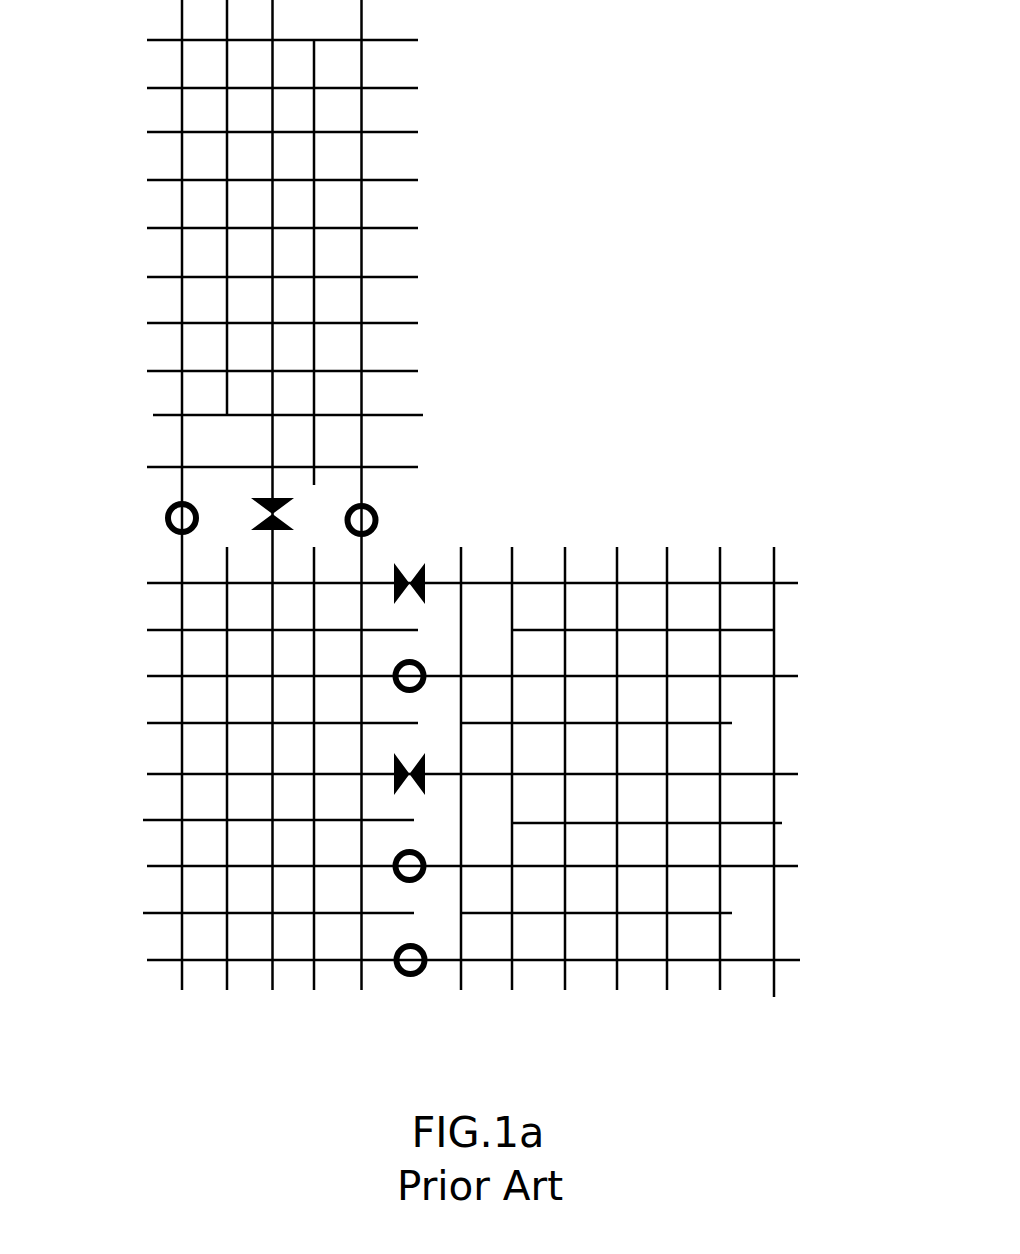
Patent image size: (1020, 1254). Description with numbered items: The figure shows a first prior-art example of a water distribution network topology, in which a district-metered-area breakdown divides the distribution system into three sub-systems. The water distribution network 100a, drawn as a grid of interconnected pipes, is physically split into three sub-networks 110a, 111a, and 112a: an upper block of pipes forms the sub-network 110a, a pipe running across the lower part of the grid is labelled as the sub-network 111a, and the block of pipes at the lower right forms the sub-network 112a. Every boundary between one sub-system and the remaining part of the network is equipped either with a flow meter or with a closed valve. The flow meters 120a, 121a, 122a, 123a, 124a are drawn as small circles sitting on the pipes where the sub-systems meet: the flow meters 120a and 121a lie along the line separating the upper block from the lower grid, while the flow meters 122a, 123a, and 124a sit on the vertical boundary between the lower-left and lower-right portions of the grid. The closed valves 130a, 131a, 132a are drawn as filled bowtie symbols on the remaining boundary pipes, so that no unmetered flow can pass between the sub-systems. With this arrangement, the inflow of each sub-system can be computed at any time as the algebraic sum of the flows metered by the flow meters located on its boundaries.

The water distribution network 100a is at (147, 990).
The sub-network 110a is at (393, 323).
The sub-network 111a is at (165, 775).
The sub-network 112a is at (685, 988).
The flow meter 120a is at (165, 516).
The flow meter 121a is at (377, 521).
The flow meter 122a is at (423, 667).
The flow meter 123a is at (424, 856).
The flow meter 124a is at (411, 977).
The closed valve 130a is at (288, 498).
The closed valve 131a is at (423, 567).
The closed valve 132a is at (425, 762).